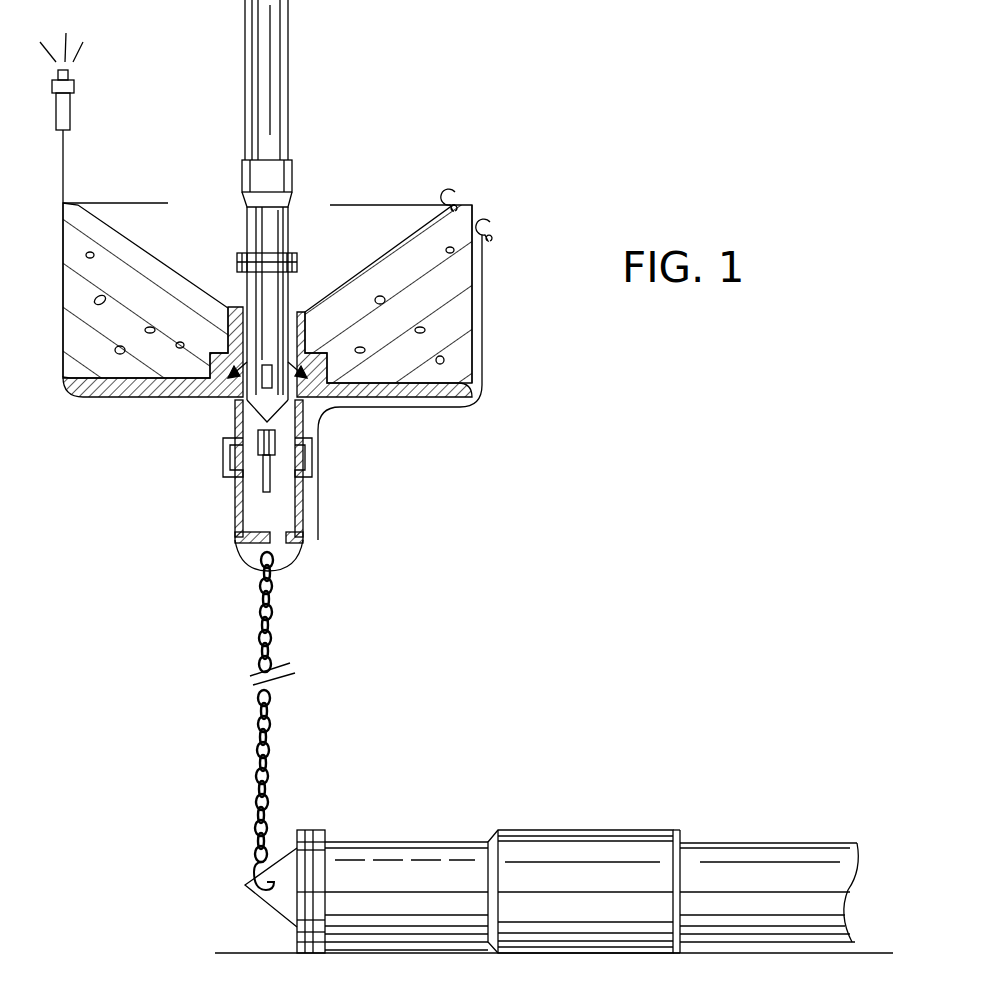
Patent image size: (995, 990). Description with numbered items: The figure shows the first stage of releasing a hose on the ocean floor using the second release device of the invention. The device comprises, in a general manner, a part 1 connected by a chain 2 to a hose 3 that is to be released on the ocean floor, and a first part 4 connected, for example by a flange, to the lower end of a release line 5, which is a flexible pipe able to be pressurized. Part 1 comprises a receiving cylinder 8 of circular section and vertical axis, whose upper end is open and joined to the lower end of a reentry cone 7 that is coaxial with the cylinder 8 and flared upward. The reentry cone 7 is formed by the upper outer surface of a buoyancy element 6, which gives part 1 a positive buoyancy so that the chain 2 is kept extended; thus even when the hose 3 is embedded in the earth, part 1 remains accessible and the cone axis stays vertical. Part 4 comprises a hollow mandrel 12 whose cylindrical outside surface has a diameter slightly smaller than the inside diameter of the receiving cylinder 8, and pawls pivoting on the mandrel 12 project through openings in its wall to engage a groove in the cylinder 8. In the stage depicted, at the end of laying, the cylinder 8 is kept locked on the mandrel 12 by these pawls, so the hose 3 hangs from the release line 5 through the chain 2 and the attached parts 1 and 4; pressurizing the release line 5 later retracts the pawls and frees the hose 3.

The part 1 is at (186, 422).
The chain 2 is at (275, 720).
The hose 3 is at (760, 865).
The first part 4 is at (311, 247).
The release line 5 is at (289, 38).
The buoyancy element 6 is at (128, 398).
The reentry cone 7 is at (133, 242).
The receiving cylinder 8 is at (248, 513).
The hollow mandrel 12 is at (260, 297).